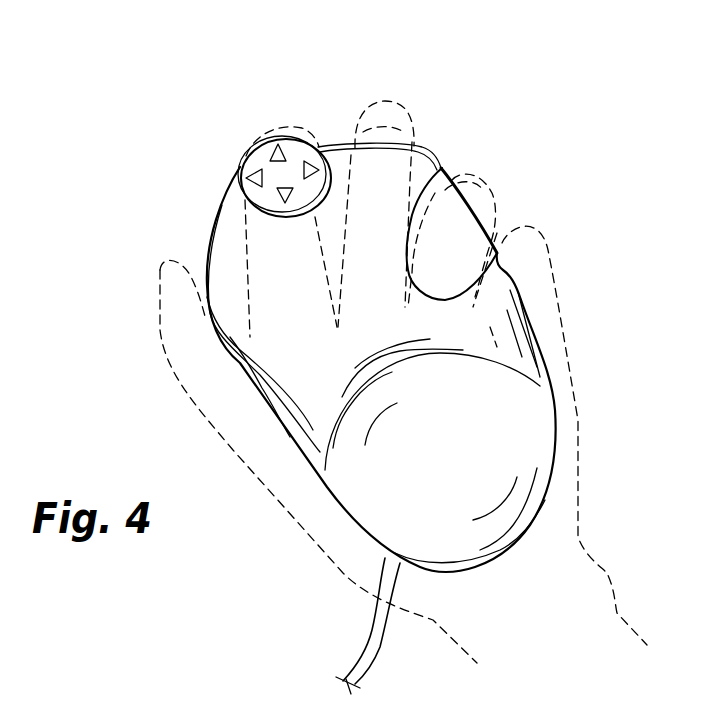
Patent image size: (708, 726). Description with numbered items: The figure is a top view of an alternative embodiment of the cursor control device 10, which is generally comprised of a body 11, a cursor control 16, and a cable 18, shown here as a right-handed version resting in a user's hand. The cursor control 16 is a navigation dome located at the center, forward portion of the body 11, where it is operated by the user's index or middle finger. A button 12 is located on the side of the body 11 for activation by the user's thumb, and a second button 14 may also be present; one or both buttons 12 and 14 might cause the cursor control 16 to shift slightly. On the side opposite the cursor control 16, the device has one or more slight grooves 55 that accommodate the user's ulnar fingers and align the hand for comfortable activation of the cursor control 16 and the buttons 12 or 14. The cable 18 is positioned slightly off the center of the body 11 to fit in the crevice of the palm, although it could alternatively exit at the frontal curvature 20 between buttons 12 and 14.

The cursor control device 10 is at (568, 70).
The body 11 is at (542, 349).
The button 12 is at (207, 295).
The button 14 is at (446, 240).
The cursor control 16 is at (272, 172).
The cable 18 is at (370, 650).
The frontal curvature 20 is at (240, 126).
The grooves 55 is at (503, 272).